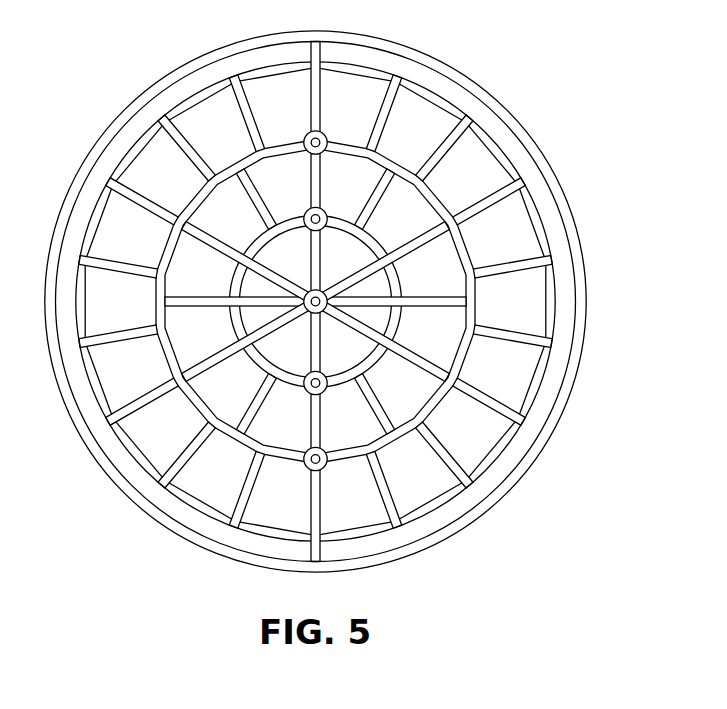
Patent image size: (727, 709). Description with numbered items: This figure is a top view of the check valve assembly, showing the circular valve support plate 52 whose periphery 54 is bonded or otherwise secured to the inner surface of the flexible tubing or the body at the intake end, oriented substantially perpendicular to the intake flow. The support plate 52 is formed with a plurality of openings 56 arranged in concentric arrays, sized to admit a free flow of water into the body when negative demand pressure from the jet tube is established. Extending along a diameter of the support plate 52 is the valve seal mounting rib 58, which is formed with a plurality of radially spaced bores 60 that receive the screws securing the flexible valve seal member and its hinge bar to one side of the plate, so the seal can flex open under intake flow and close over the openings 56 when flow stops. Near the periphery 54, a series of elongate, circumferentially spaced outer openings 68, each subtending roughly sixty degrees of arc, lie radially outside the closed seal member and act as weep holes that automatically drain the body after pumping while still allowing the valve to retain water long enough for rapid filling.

The valve support plate 52 is at (588, 133).
The periphery 54 is at (586, 259).
The openings 56 is at (227, 193).
The valve seal mounting rib 58 is at (319, 92).
The radially spaced bores 60 is at (323, 133).
The outer openings 68 is at (470, 101).